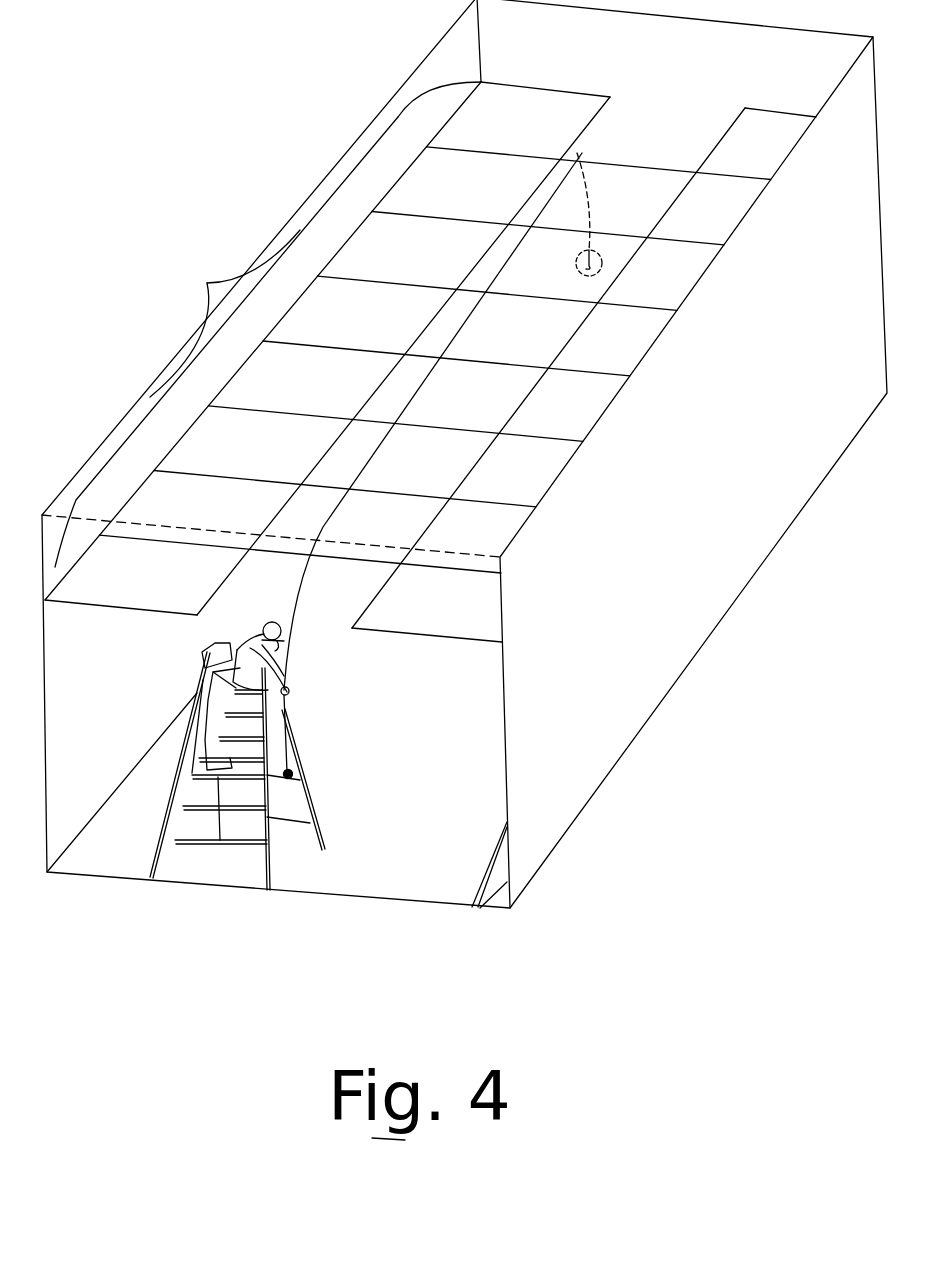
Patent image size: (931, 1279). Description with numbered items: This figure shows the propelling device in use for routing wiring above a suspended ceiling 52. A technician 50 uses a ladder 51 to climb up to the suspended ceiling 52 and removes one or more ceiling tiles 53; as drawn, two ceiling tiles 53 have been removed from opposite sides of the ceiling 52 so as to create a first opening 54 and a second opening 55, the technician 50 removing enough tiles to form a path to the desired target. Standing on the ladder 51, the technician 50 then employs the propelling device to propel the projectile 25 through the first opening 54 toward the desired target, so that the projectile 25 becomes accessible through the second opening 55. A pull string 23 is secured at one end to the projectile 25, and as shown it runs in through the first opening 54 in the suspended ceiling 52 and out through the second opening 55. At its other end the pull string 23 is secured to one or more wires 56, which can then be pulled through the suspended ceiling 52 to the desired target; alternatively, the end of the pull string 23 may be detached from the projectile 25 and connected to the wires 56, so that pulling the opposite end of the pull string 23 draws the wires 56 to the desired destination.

The pull string 23 is at (335, 523).
The projectile 25 is at (577, 271).
The technician 50 is at (225, 668).
The ladder 51 is at (310, 797).
The suspended ceiling 52 is at (207, 283).
The ceiling tiles 53 is at (487, 853).
The first opening 54 is at (245, 582).
The second opening 55 is at (647, 113).
The wires 56 is at (293, 772).